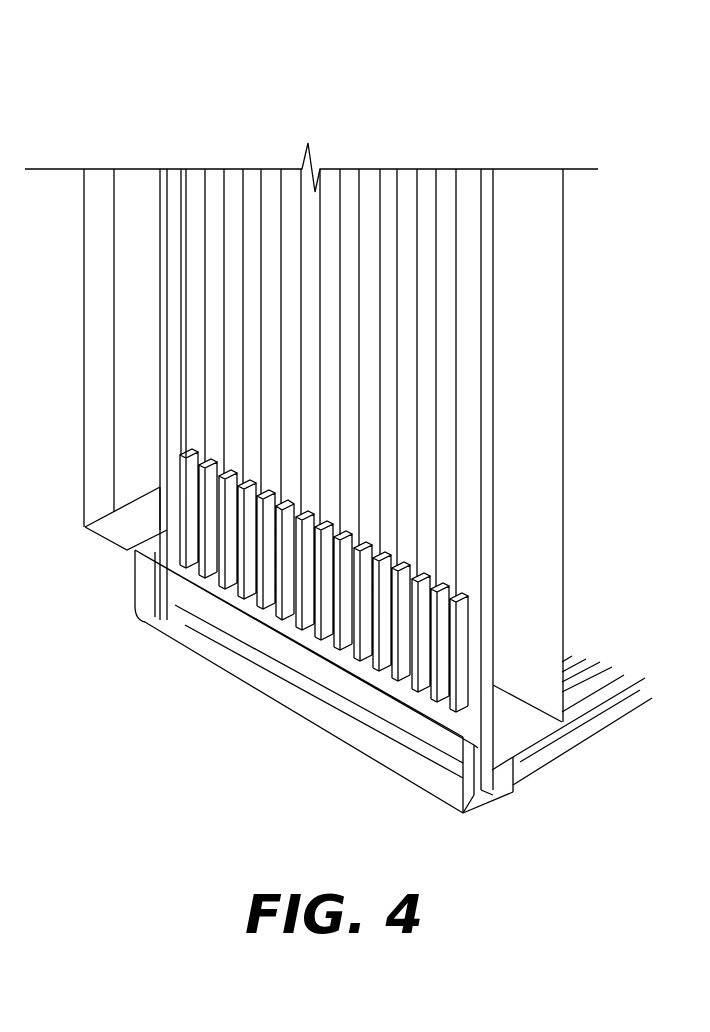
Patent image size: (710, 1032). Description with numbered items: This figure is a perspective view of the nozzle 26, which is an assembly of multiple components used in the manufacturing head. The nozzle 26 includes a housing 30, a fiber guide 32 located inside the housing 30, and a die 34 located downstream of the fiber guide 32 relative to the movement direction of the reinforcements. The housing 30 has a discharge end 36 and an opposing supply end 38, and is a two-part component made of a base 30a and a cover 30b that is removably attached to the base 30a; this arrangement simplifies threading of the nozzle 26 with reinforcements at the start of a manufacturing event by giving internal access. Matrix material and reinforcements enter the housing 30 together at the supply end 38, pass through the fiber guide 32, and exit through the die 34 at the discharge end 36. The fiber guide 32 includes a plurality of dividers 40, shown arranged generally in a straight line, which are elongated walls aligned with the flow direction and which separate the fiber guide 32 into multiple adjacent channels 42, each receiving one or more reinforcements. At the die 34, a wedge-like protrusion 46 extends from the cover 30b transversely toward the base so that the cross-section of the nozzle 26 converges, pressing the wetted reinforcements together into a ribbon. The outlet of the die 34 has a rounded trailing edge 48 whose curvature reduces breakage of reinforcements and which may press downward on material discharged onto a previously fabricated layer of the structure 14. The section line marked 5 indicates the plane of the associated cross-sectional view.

The structure 14 is at (607, 702).
The nozzle 26 is at (583, 112).
The housing 30 is at (91, 333).
The base 30a is at (128, 321).
The cover 30b is at (105, 266).
The fiber guide 32 is at (126, 478).
The die 34 is at (141, 597).
The discharge end 36 is at (513, 806).
The supply end 38 is at (604, 181).
The dividers 40 is at (443, 594).
The channels 42 is at (405, 697).
The wedge-like protrusion 46 is at (470, 795).
The rounded trailing edge 48 is at (483, 790).
The section line 5 is at (430, 804).